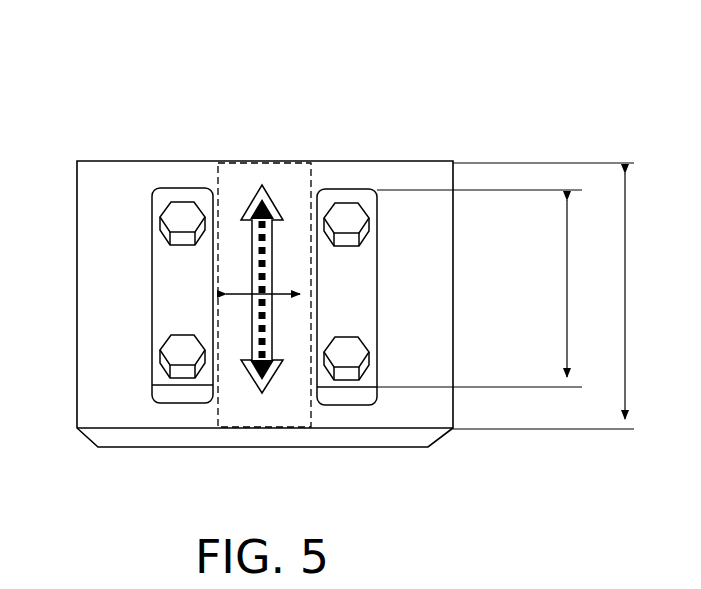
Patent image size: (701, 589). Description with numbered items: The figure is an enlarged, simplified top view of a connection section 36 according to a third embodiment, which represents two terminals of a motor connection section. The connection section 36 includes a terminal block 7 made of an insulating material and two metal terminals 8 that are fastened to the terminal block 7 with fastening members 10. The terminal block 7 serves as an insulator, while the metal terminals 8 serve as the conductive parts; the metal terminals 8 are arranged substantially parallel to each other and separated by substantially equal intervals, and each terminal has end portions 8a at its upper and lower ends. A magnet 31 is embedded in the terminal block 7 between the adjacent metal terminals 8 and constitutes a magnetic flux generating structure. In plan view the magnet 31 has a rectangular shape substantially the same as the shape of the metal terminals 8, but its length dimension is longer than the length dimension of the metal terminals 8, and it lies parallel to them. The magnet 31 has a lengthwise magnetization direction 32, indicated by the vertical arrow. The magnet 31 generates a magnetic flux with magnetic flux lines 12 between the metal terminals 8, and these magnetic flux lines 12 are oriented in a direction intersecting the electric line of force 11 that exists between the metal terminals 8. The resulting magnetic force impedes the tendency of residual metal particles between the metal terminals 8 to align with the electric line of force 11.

The connection section 36 is at (418, 84).
The terminal block 7 is at (435, 174).
The magnet 31 is at (241, 160).
The metal terminals 8 is at (154, 183).
The clamp end portion 8a is at (180, 188).
The fastening members 10 is at (178, 228).
The electric line of force 11 is at (291, 290).
The magnetic flux lines 12 is at (276, 380).
The magnetization direction 32 is at (257, 318).